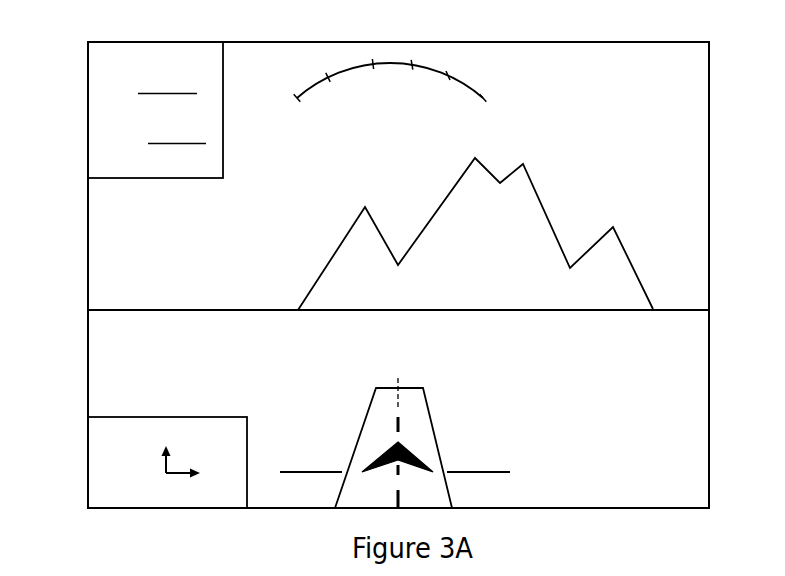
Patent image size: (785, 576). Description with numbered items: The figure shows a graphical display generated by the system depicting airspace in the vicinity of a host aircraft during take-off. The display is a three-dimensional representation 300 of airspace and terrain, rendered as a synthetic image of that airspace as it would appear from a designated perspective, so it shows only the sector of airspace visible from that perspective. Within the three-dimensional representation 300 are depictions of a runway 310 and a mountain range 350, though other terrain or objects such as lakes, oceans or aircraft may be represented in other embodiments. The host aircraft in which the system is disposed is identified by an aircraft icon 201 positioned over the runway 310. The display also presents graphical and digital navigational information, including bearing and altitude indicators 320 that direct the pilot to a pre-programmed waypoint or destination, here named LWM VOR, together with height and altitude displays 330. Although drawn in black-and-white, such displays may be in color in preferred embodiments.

The three-dimensional representation 300 is at (709, 100).
The height and altitude displays 330 is at (88, 115).
The mountain range 350 is at (445, 198).
The bearing and altitude indicators 320 is at (177, 415).
The runway 310 is at (432, 413).
The aircraft icon 201 is at (377, 458).